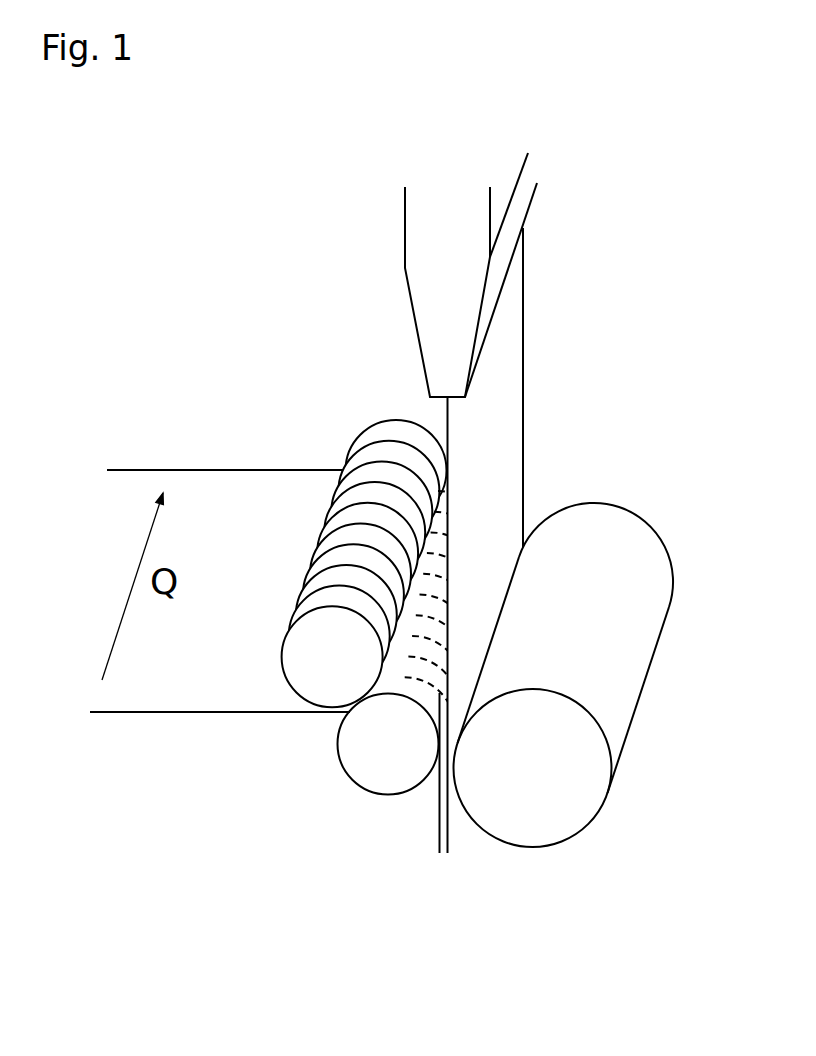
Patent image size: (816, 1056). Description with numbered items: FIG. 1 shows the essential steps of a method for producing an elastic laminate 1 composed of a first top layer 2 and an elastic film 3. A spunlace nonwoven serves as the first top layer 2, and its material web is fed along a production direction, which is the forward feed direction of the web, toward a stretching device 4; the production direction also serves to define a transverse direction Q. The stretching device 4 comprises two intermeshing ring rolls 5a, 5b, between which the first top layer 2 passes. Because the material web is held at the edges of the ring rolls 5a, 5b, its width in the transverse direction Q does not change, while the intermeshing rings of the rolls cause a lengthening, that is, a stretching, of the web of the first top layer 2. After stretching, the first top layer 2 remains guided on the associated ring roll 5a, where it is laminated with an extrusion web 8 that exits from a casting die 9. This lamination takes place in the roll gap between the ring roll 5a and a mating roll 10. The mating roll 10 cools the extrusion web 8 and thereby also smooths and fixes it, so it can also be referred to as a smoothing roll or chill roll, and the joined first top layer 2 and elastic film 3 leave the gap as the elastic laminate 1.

The elastic laminate 1 is at (432, 830).
The first top layer 2 is at (138, 707).
The elastic film 3 is at (447, 832).
The stretching device 4 is at (307, 762).
The ring roll 5a is at (387, 753).
The ring roll 5b is at (342, 653).
The extrusion web 8 is at (490, 433).
The casting die 9 is at (582, 245).
The mating roll 10 is at (548, 782).